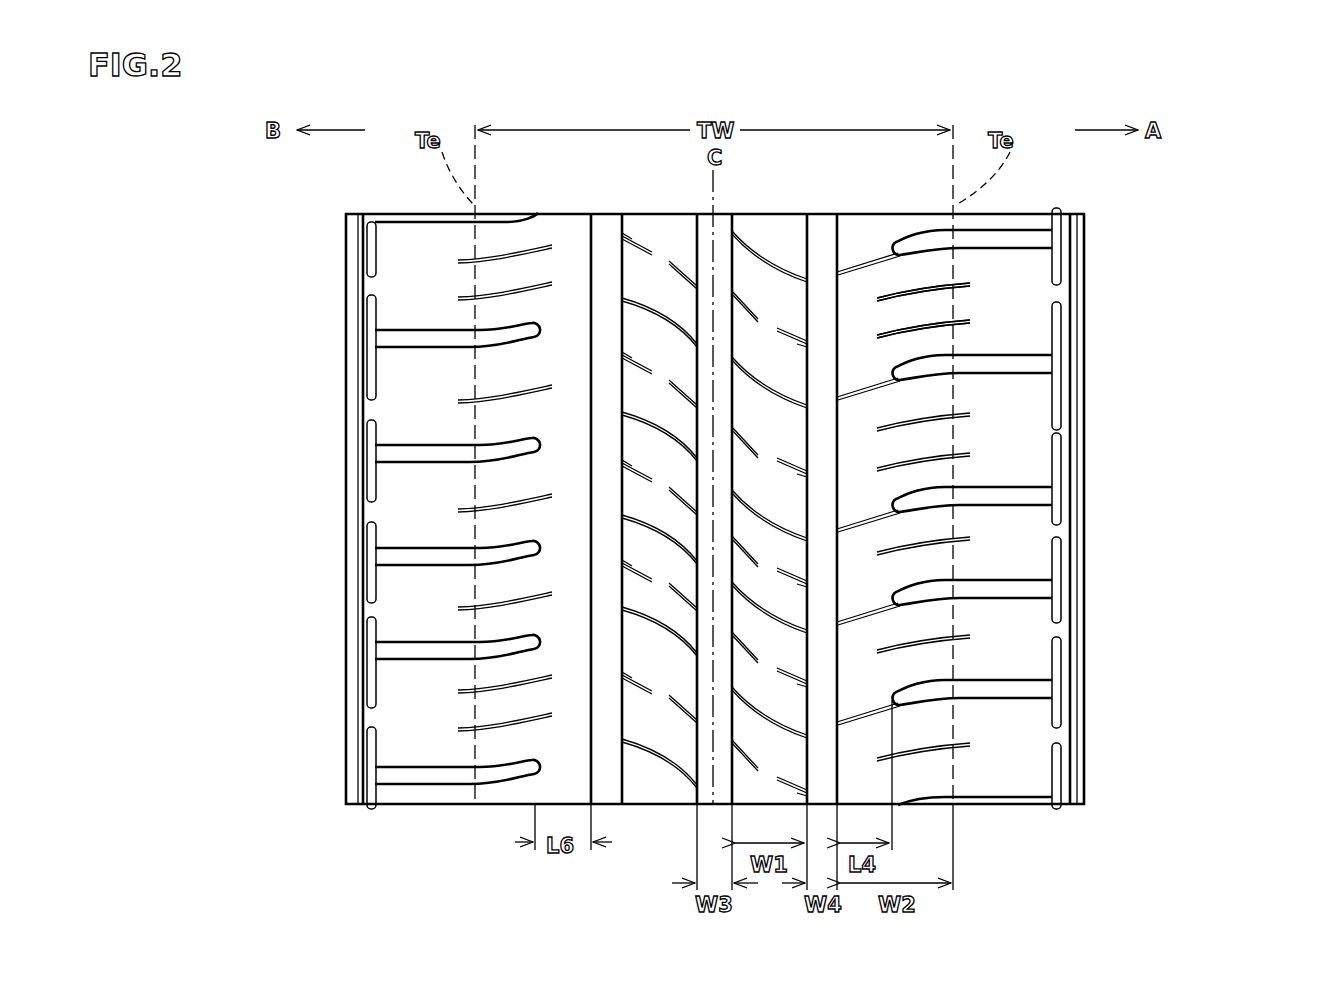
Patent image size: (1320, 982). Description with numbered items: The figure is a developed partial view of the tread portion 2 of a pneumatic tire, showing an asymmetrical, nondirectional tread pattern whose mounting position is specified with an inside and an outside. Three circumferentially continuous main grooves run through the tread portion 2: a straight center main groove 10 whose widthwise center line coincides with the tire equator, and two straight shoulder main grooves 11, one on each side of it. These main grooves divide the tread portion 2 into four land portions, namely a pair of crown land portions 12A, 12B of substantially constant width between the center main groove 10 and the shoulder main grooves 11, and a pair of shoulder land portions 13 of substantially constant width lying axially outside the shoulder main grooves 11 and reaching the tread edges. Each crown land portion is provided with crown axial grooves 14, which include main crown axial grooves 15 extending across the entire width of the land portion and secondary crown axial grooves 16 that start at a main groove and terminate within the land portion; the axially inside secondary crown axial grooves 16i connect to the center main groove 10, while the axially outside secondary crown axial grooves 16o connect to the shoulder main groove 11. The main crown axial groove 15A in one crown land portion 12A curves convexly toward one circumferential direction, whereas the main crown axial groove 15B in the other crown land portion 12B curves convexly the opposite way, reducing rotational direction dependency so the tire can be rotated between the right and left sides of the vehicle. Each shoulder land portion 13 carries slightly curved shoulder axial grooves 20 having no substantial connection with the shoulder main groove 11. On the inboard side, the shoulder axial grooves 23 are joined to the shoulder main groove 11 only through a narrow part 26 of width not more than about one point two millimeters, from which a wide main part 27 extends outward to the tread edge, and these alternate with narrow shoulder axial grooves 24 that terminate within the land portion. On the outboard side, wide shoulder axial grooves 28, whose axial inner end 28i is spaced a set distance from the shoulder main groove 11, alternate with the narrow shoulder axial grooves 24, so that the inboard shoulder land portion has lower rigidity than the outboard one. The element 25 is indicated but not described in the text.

The tread portion 2 is at (1066, 198).
The center main groove 10 is at (723, 244).
The shoulder main groove 11 is at (606, 258).
The crown land portion 12A is at (776, 248).
The crown land portion 12B is at (663, 248).
The shoulder land portion 13 is at (520, 243).
The crown axial groove 14 is at (1242, 215).
The main crown axial groove 15 is at (766, 383).
The main crown axial groove 15A is at (768, 518).
The main crown axial groove 15B is at (665, 428).
The secondary crown axial groove 16 is at (1190, 215).
The axially inside secondary crown axial groove 16i is at (880, 300).
The axially outside secondary crown axial groove 16o is at (880, 337).
The shoulder axial groove 20 is at (505, 397).
The shoulder axial groove 23 is at (1198, 572).
The narrow shoulder axial groove 24 is at (505, 296).
The inner end of lateral groove 25 is at (823, 732).
The narrow part 26 is at (875, 620).
The wide main part 27 is at (905, 600).
The wide shoulder axial groove 28 is at (440, 342).
The axial inner end of wide shoulder axial groove 28i is at (530, 740).